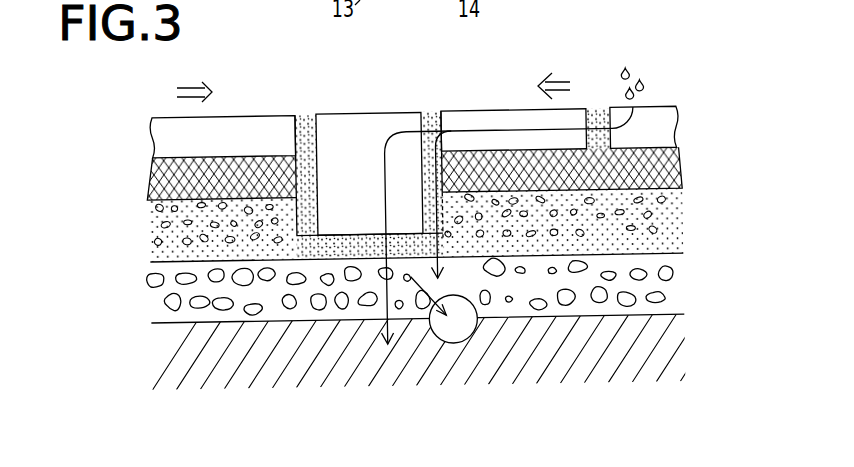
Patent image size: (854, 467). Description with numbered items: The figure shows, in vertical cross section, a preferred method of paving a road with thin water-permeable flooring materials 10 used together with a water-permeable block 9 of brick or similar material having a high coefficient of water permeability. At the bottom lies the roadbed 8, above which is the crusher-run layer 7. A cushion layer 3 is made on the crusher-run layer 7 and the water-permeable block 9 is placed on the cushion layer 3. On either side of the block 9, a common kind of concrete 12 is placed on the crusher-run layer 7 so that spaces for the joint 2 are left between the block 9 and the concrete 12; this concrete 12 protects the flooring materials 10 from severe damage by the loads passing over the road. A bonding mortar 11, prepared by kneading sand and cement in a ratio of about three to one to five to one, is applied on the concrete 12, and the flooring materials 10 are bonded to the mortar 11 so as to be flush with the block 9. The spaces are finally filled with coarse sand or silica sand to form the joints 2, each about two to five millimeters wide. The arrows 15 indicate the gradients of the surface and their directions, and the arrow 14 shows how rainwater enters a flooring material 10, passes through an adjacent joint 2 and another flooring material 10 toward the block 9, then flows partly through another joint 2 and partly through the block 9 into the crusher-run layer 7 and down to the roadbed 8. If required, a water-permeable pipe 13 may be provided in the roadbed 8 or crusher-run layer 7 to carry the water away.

The joint 2 is at (304, 118).
The cushion layer 3 is at (357, 252).
The crusher-run layer 7 is at (683, 278).
The roadbed 8 is at (672, 342).
The water-permeable block 9 is at (358, 136).
The water-permeable flooring material 10 is at (237, 128).
The bonding mortar 11 is at (683, 178).
The concrete 12 is at (673, 218).
The water-permeable pipe 13 is at (455, 338).
The arrow indicating rainwater flow 14 is at (637, 76).
The arrows indicating gradients 15 is at (189, 78).